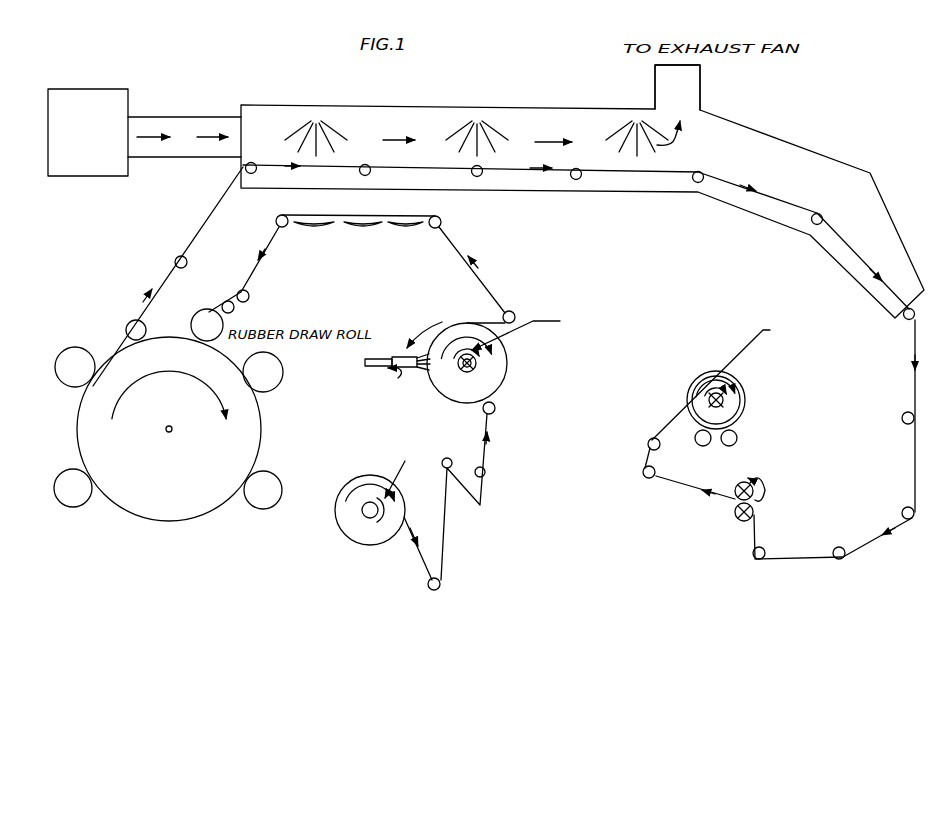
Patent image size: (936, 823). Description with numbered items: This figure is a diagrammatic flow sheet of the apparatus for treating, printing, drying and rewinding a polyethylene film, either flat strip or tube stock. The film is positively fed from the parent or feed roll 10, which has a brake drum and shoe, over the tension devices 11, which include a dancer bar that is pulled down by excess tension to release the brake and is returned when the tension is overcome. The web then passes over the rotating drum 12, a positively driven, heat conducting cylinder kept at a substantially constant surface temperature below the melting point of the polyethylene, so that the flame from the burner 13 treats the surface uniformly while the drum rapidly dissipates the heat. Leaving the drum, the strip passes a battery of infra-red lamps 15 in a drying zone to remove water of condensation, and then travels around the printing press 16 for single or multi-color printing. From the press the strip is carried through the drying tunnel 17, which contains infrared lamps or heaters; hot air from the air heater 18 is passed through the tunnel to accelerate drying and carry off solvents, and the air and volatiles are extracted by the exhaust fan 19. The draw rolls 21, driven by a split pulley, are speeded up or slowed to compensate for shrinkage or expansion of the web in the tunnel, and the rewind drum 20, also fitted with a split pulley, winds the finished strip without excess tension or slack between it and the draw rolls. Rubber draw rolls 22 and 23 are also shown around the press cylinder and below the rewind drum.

The parent roll 10 is at (350, 523).
The tension devices 11 is at (449, 472).
The rotating drum 12 is at (502, 368).
The burner 13 is at (441, 380).
The infra-red lamps 15 is at (414, 217).
The printing press 16 is at (169, 429).
The drying tunnel 17 is at (582, 192).
The air heater 18 is at (107, 102).
The exhaust fan 19 is at (694, 100).
The rewind drum 20 is at (741, 391).
The draw rolls 21 is at (731, 516).
The rubber draw rolls 22 is at (272, 388).
The rubber draw rolls 23 is at (713, 436).